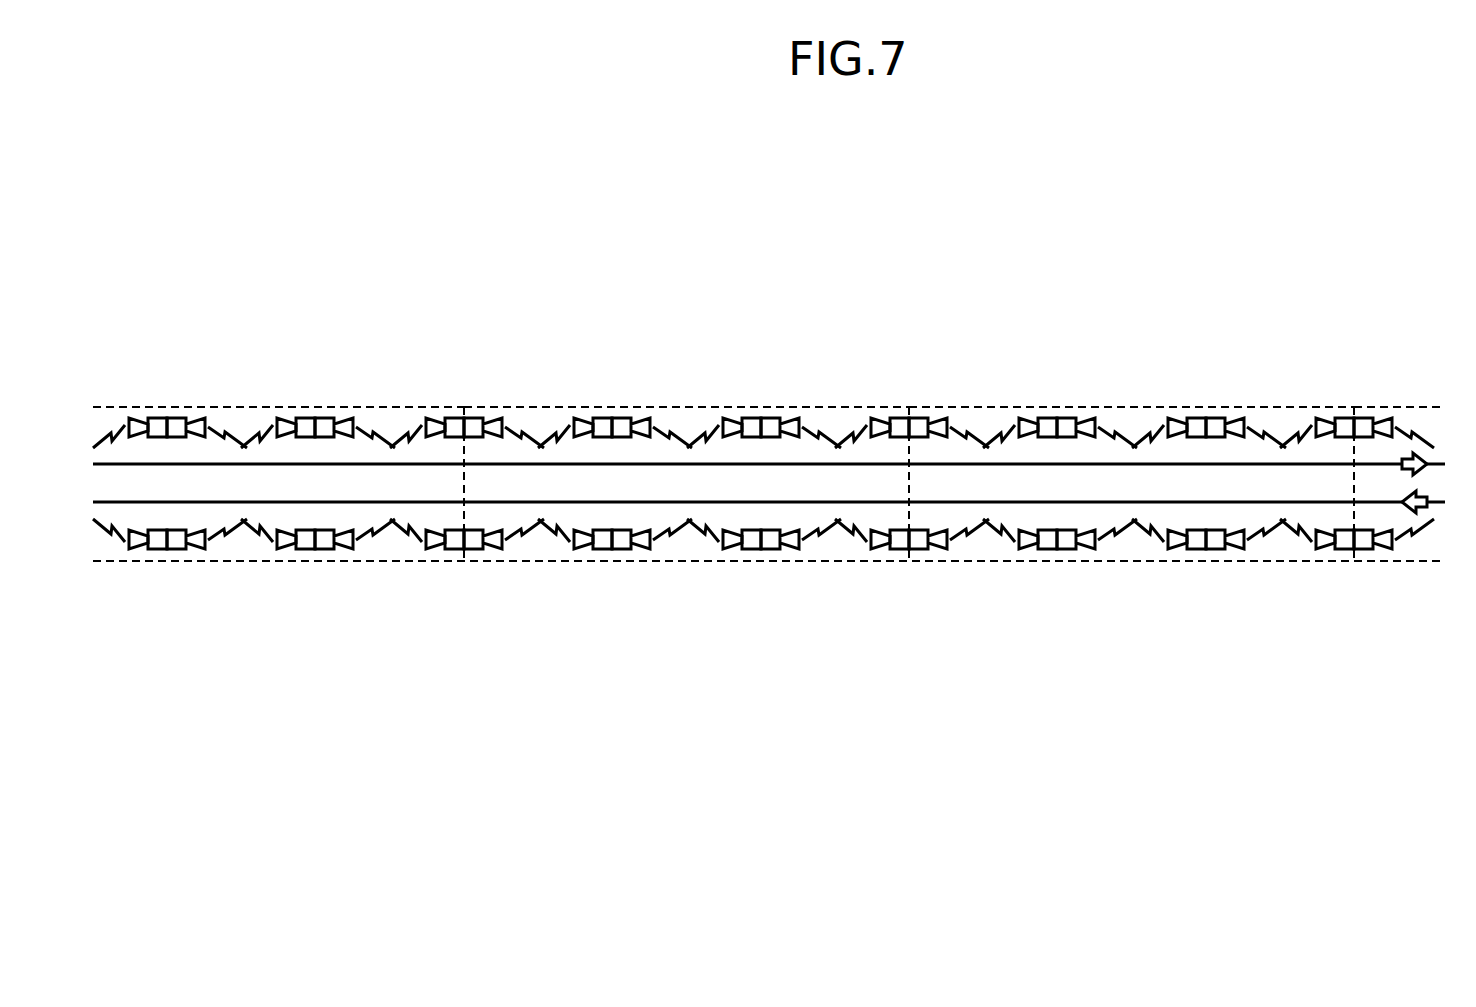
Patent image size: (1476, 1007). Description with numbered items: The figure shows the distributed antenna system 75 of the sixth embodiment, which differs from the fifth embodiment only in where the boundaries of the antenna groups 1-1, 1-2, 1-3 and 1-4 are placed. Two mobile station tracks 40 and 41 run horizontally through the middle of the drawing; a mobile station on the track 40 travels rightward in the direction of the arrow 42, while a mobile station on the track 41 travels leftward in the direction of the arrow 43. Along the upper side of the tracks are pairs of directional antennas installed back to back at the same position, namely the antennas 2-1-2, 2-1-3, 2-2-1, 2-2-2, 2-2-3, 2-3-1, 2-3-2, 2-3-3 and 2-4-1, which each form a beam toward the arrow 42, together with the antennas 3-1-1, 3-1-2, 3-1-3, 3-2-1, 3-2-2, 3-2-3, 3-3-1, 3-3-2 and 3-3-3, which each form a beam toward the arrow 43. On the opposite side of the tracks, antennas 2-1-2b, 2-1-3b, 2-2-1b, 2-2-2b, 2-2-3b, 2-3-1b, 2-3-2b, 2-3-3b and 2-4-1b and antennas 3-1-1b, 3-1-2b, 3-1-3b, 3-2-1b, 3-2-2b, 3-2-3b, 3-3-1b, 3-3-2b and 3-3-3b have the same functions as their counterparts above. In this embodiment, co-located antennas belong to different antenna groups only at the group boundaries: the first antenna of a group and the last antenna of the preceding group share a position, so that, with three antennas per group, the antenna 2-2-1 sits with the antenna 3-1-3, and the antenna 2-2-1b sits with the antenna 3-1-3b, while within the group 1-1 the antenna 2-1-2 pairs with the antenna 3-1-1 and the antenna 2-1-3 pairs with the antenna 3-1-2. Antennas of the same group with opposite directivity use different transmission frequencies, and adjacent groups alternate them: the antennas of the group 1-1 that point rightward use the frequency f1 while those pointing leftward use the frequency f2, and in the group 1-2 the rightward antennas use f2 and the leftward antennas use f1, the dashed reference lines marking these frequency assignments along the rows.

The distributed antenna system 75 is at (1289, 188).
The mobile station track 40 is at (1440, 460).
The mobile station track 41 is at (1440, 508).
The arrow 42 is at (1427, 462).
The arrow 43 is at (1430, 513).
The antenna group 1-1 is at (354, 412).
The antenna group 1-2 is at (800, 412).
The antenna group 1-3 is at (1245, 412).
The antenna group 1-4 is at (1391, 410).
The transmission frequency f1 is at (222, 532).
The transmission frequency f2 is at (102, 532).
The antenna 2-1-2 is at (177, 417).
The antenna 2-1-3 is at (325, 417).
The antenna 2-2-1 is at (474, 417).
The antenna 2-2-2 is at (622, 417).
The antenna 2-2-3 is at (771, 417).
The antenna 2-3-1 is at (919, 417).
The antenna 2-3-2 is at (1067, 417).
The antenna 2-3-3 is at (1216, 417).
The antenna 2-4-1 is at (1364, 417).
The antenna 3-1-1 is at (158, 417).
The antenna 3-1-2 is at (306, 417).
The antenna 3-1-3 is at (455, 417).
The antenna 3-2-1 is at (603, 417).
The antenna 3-2-2 is at (752, 417).
The antenna 3-2-3 is at (900, 417).
The antenna 3-3-1 is at (1048, 417).
The antenna 3-3-2 is at (1197, 417).
The antenna 3-3-3 is at (1345, 417).
The antenna 2-1-2b is at (177, 551).
The antenna 2-1-3b is at (325, 551).
The antenna 2-2-1b is at (474, 551).
The antenna 2-2-2b is at (622, 551).
The antenna 2-2-3b is at (771, 551).
The antenna 2-3-1b is at (919, 551).
The antenna 2-3-2b is at (1067, 551).
The antenna 2-3-3b is at (1216, 551).
The antenna 2-4-1b is at (1364, 551).
The antenna 3-1-1b is at (158, 551).
The antenna 3-1-2b is at (306, 551).
The antenna 3-1-3b is at (455, 551).
The antenna 3-2-1b is at (603, 551).
The antenna 3-2-2b is at (752, 551).
The antenna 3-2-3b is at (900, 551).
The antenna 3-3-1b is at (1048, 551).
The antenna 3-3-2b is at (1197, 551).
The antenna 3-3-3b is at (1345, 551).